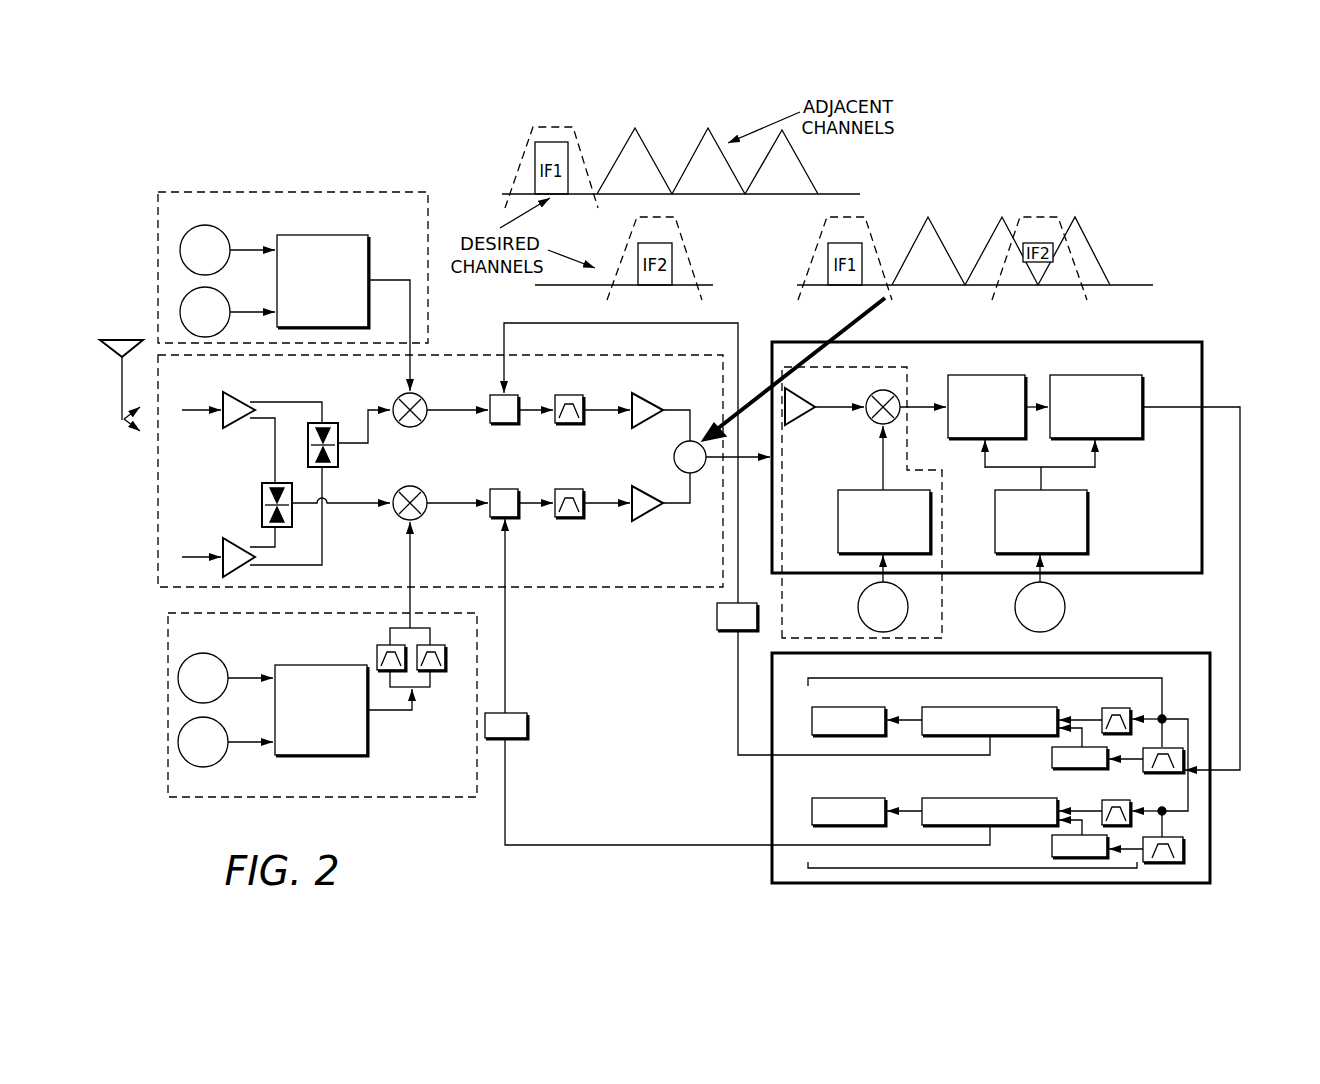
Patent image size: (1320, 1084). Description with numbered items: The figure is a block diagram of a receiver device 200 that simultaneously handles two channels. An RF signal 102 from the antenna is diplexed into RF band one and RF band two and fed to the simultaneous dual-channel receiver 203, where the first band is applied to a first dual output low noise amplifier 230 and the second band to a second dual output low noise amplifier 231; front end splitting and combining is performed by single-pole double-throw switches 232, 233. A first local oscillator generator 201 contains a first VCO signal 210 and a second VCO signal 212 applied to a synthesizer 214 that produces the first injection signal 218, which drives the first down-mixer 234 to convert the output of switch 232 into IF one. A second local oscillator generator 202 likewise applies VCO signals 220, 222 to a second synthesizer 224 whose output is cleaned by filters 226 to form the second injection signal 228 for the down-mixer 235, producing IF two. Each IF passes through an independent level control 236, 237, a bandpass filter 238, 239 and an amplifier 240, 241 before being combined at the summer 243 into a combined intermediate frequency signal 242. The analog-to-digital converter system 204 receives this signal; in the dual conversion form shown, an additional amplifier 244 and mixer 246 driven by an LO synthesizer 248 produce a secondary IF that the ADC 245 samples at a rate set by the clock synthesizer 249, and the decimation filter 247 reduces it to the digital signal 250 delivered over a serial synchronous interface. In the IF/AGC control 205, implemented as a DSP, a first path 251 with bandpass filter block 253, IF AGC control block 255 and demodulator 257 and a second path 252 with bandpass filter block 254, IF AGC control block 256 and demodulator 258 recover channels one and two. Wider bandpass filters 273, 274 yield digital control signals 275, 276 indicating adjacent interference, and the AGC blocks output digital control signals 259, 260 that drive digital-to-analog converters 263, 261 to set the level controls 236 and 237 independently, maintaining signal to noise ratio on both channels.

The RF signal 102 is at (121, 363).
The receiver 200 is at (1252, 854).
The first local oscillator generator 201 is at (267, 267).
The second local oscillator generator 202 is at (294, 705).
The simultaneous dual-channel receiver 203 is at (415, 471).
The analog-to-digital converter system 204 is at (1004, 477).
The IF/AGC control 205 is at (878, 603).
The first VCO signal 210 is at (224, 243).
The second VCO signal 212 is at (224, 305).
The synthesizer 214 is at (336, 269).
The first injection signal 218 is at (419, 335).
The first VCO signal 220 is at (225, 671).
The second VCO signal 222 is at (225, 733).
The second synthesizer 224 is at (321, 697).
The filters 226 is at (422, 669).
The second injection signal 228 is at (440, 575).
The first dual output low noise amplifier 230 is at (218, 425).
The second dual output low noise amplifier 231 is at (211, 560).
The single-pole double-throw switch 232 is at (350, 438).
The single-pole double-throw switch 233 is at (305, 492).
The first down-mixer 234 is at (430, 401).
The down-mixer 235 is at (430, 494).
The level control 236 is at (525, 399).
The level control 237 is at (525, 493).
The first bandpass filter 238 is at (586, 399).
The second bandpass filter 239 is at (586, 493).
The first amplifier 240 is at (662, 401).
The second amplifier 241 is at (664, 515).
The combined intermediate frequency signal 242 is at (738, 488).
The summer 243 is at (661, 457).
The additional amplifier 244 is at (816, 399).
The ADC 245 is at (974, 419).
The mixer 246 is at (871, 427).
The decimation filter 247 is at (1111, 394).
The LO synthesizer 248 is at (857, 490).
The clock synthesizer 249 is at (1062, 497).
The digital signal 250 is at (1217, 588).
The first path 251 is at (970, 700).
The second path 252 is at (955, 840).
The bandpass filter block 253 is at (1113, 710).
The bandpass filter block 254 is at (1113, 800).
The IF AGC control block 255 is at (988, 708).
The IF AGC control block 256 is at (972, 798).
The demodulator 257 is at (849, 708).
The demodulator 258 is at (844, 798).
The digital control signal 259 is at (747, 539).
The digital control signal 260 is at (747, 682).
The digital-to-analog converter 261 is at (533, 726).
The digital-to-analog converter 263 is at (710, 617).
The bandpass filter 273 is at (1158, 729).
The bandpass filter 274 is at (1180, 837).
The digital control signal 275 is at (1081, 761).
The digital control signal 276 is at (1048, 846).